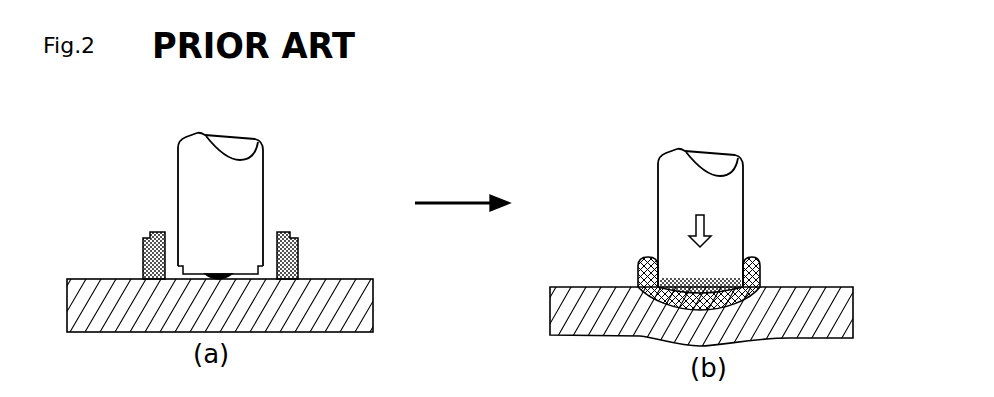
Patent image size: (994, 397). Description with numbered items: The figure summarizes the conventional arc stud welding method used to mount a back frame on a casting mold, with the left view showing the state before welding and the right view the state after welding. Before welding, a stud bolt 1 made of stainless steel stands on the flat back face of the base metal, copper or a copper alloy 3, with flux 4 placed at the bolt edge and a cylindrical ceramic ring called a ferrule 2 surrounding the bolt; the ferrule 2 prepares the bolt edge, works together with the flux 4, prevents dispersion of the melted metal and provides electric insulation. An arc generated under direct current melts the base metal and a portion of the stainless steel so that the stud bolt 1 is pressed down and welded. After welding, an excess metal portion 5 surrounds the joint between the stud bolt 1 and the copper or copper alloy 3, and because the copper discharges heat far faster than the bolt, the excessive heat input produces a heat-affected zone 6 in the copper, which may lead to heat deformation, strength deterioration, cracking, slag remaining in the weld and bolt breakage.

The stud bolt 1 is at (265, 170).
The ferrule 2 is at (298, 243).
The copper or copper alloy 3 is at (373, 300).
The flux 4 is at (208, 276).
The excess metal portion 5 is at (762, 258).
The heat-affected zone 6 is at (640, 287).